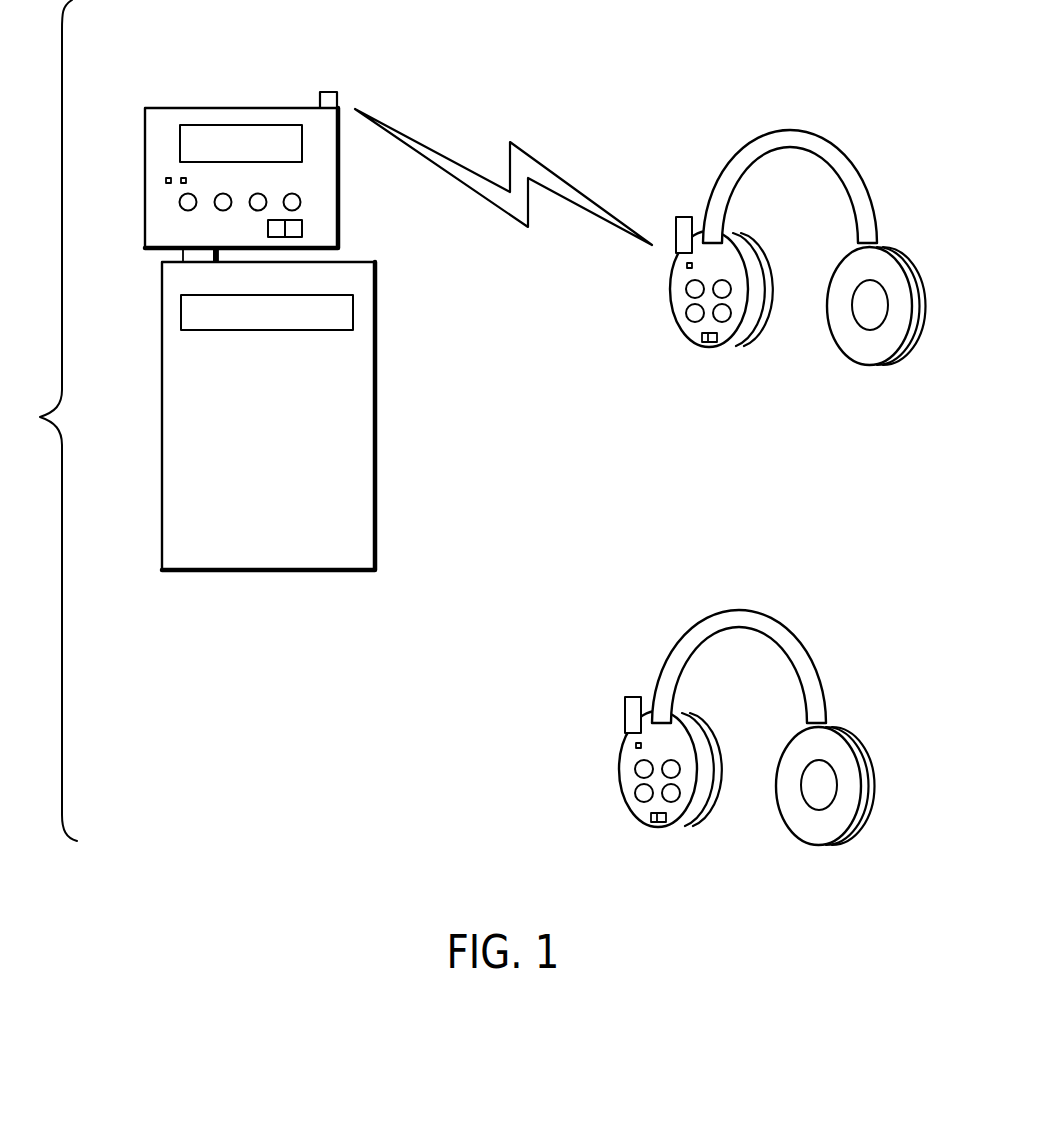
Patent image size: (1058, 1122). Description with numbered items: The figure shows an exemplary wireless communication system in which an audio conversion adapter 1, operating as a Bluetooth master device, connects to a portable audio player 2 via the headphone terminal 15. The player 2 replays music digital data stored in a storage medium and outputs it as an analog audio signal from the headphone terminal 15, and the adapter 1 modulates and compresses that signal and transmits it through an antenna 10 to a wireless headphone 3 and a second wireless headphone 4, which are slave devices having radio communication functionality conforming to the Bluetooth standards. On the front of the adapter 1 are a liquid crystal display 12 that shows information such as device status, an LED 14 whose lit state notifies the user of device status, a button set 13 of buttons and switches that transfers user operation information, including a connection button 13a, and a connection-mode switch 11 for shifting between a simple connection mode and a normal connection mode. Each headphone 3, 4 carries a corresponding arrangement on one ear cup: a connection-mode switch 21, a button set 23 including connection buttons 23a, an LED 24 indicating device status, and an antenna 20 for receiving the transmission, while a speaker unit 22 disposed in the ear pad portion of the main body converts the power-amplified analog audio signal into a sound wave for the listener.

The audio conversion adapter 1 is at (226, 138).
The portable audio player 2 is at (290, 570).
The wireless headphone 3 is at (764, 236).
The wireless headphone 4 is at (745, 815).
The antenna 10 is at (330, 92).
The connection-mode switch 11 is at (302, 228).
The liquid crystal display 12 is at (277, 125).
The button set 13 is at (218, 211).
The connection button 13a is at (179, 202).
The LED 14 is at (166, 181).
The headphone terminal 15 is at (186, 252).
The antenna 20 is at (683, 217).
The connection-mode switch 21 is at (707, 343).
The speaker unit 22 is at (870, 330).
The button set 23 is at (686, 312).
The connection buttons 23a is at (730, 318).
The LED 24 is at (687, 267).